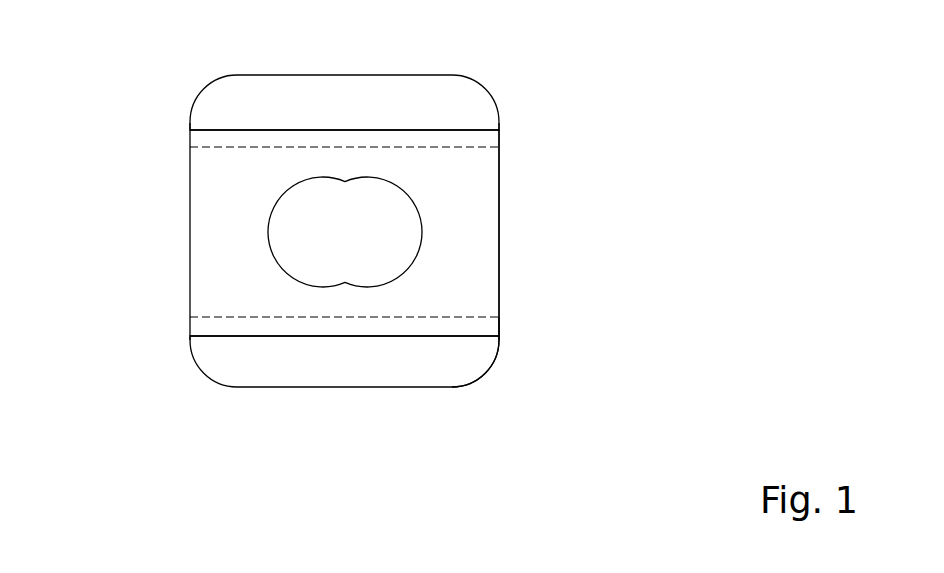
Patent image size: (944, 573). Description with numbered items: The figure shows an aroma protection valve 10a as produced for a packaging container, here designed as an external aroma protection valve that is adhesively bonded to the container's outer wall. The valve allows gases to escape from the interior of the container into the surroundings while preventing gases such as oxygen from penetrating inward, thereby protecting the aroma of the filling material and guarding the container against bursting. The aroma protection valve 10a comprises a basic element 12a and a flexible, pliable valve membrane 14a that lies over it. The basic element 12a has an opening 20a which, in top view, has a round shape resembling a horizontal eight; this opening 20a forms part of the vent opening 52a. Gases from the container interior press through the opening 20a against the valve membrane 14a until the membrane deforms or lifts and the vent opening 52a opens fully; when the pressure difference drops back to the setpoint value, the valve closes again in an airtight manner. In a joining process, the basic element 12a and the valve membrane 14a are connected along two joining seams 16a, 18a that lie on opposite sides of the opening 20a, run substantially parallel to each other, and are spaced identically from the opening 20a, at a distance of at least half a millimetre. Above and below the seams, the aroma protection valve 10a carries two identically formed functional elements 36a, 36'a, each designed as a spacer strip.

The aroma protection valve 10a is at (565, 172).
The basic element 12a is at (512, 324).
The valve membrane 14a is at (477, 270).
The joining seam 16a is at (217, 317).
The joining seam 18a is at (217, 147).
The opening 20a is at (300, 220).
The functional element 36a is at (394, 108).
The further functional element 36'a is at (344, 404).
The vent opening 52a is at (452, 217).